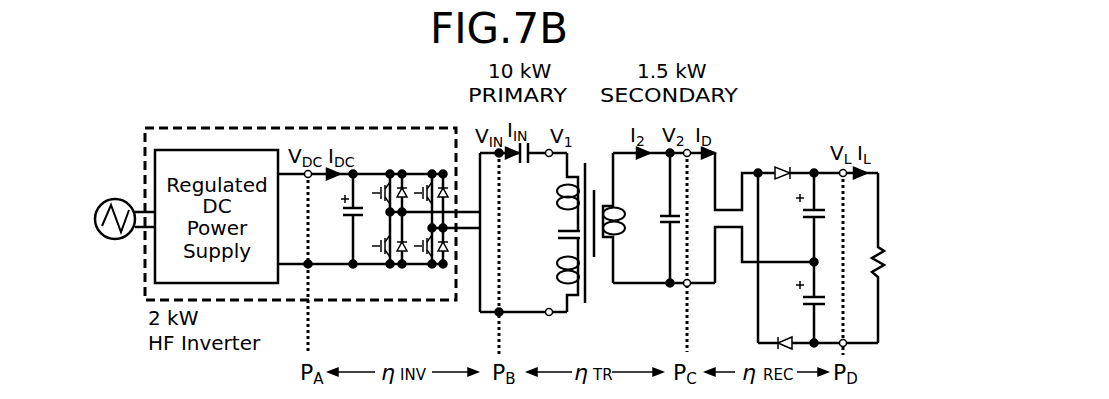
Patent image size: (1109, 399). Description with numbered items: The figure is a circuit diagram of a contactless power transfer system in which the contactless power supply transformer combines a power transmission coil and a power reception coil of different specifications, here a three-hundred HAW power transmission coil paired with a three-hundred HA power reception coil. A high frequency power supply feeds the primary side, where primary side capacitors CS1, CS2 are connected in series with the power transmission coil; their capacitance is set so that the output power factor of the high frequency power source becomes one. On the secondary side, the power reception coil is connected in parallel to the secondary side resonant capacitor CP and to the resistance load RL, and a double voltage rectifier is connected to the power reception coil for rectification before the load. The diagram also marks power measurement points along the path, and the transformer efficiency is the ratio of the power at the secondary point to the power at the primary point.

The series capacitor CS1 is at (533, 171).
The series capacitor CS2 is at (550, 234).
The secondary side resonant capacitor CP is at (661, 218).
The resistance load RL is at (895, 258).